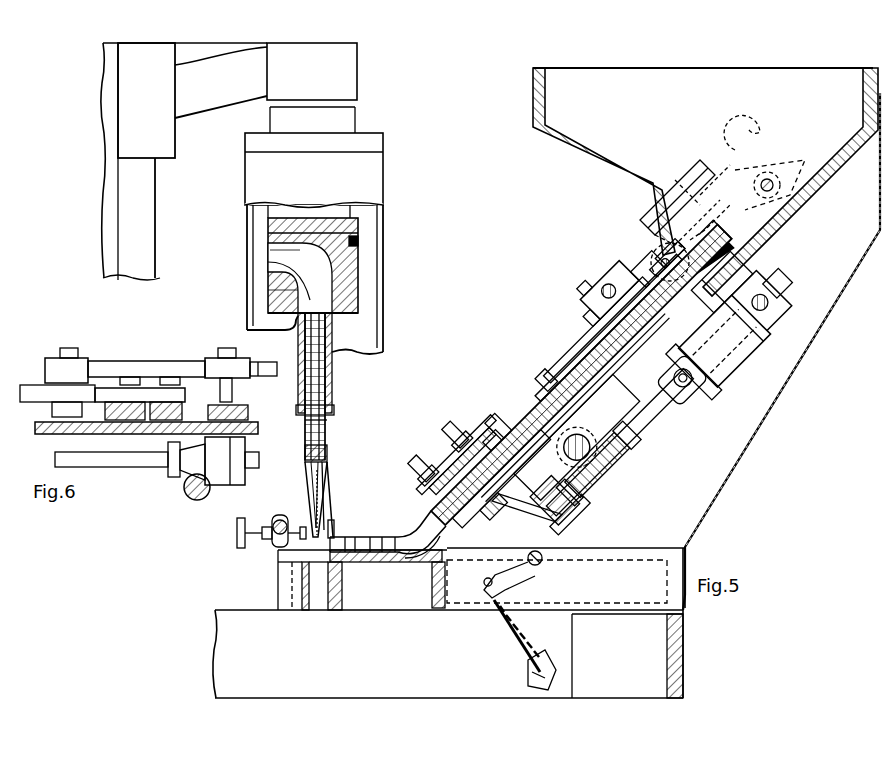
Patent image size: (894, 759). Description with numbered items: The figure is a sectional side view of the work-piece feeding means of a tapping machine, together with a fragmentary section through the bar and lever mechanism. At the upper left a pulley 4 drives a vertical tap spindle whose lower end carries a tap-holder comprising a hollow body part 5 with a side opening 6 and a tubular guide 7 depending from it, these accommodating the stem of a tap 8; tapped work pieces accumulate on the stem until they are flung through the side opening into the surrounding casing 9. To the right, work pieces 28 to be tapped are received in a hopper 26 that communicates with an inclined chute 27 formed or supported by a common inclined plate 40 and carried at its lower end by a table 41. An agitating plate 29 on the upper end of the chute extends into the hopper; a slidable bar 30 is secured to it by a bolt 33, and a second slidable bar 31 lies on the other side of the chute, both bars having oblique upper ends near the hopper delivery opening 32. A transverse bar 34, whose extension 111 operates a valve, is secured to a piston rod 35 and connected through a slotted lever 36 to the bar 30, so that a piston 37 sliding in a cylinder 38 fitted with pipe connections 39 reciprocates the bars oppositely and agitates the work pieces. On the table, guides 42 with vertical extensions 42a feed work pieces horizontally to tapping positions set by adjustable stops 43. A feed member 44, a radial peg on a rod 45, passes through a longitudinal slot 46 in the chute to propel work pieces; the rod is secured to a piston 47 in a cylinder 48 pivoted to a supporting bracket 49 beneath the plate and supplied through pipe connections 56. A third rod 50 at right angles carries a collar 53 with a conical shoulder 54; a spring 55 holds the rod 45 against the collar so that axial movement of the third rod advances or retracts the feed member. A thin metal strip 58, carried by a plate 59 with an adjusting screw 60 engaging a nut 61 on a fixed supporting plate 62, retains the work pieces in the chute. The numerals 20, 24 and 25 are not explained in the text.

In FIG. 5, the pulley 4 is at (170, 160).
In FIG. 5, the hollow body part 5 is at (355, 232).
In FIG. 5, the side opening 6 is at (280, 262).
In FIG. 5, the tubular guide 7 is at (332, 384).
In FIG. 5, the tap 8 is at (310, 495).
In FIG. 5, the casing 9 is at (383, 259).
In FIG. 5, the hopper frame 20 is at (590, 150).
In FIG. 5, the channel bend 24 is at (275, 290).
In FIG. 5, the pipe section 25 is at (327, 425).
In FIG. 5, the hopper 26 is at (506, 484).
In FIG. 5, the inclined chute 27 is at (575, 408).
In FIG. 5, the work piece 28 is at (327, 470).
In FIG. 5, the agitating plate 29 is at (690, 252).
In FIG. 5, the slidable bar 30 is at (608, 327).
In FIG. 6, the slidable bar 30 is at (180, 406).
In FIG. 6, the slidable bar 31 is at (248, 409).
In FIG. 5, the hopper delivery opening 32 is at (707, 249).
In FIG. 5, the bolt 33 is at (670, 254).
In FIG. 5, the transverse bar 34 is at (606, 287).
In FIG. 6, the transverse bar 34 is at (160, 362).
In FIG. 5, the piston rod 35 is at (658, 260).
In FIG. 5, the slotted lever 36 is at (590, 329).
In FIG. 6, the slotted lever 36 is at (30, 398).
In FIG. 5, the piston 37 is at (700, 170).
In FIG. 5, the cylinder 38 is at (692, 190).
In FIG. 5, the pipe connection 39 is at (725, 174).
In FIG. 5, the inclined plate 40 is at (581, 375).
In FIG. 6, the inclined plate 40 is at (126, 434).
In FIG. 5, the table 41 is at (632, 553).
In FIG. 5, the guide 42 is at (385, 537).
In FIG. 5, the vertical extension 42a is at (327, 515).
In FIG. 5, the adjustable stop 43 is at (262, 548).
In FIG. 5, the feed member 44 is at (527, 508).
In FIG. 5, the rod 45 is at (620, 443).
In FIG. 6, the rod 45 is at (200, 500).
In FIG. 5, the longitudinal slot 46 is at (557, 502).
In FIG. 5, the piston 47 is at (760, 305).
In FIG. 5, the cylinder 48 is at (720, 346).
In FIG. 5, the supporting bracket 49 is at (722, 282).
In FIG. 5, the third rod 50 is at (576, 447).
In FIG. 6, the third rod 50 is at (100, 467).
In FIG. 6, the collar 53 is at (232, 480).
In FIG. 6, the conical shoulder 54 is at (204, 456).
In FIG. 5, the spring 55 is at (512, 618).
In FIG. 5, the pipe connection 56 is at (727, 335).
In FIG. 5, the metal strip 58 is at (422, 530).
In FIG. 5, the plate 59 is at (492, 431).
In FIG. 5, the adjusting screw 60 is at (438, 451).
In FIG. 5, the nut 61 is at (445, 458).
In FIG. 5, the fixed supporting plate 62 is at (459, 458).
In FIG. 6, the extension 111 is at (275, 364).